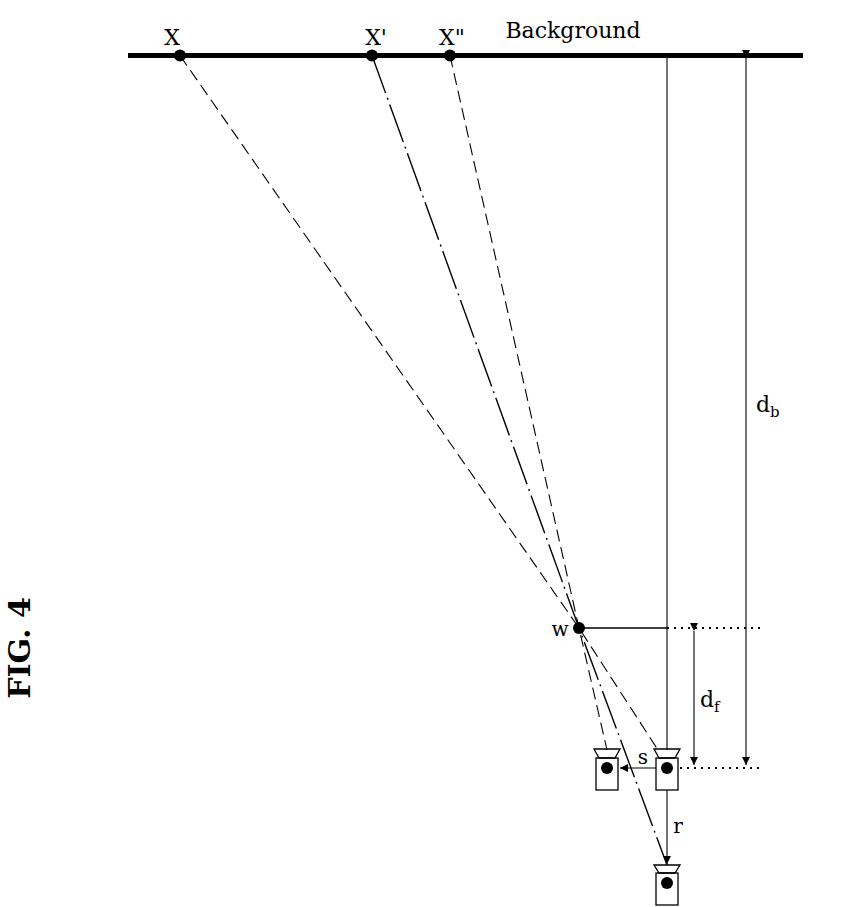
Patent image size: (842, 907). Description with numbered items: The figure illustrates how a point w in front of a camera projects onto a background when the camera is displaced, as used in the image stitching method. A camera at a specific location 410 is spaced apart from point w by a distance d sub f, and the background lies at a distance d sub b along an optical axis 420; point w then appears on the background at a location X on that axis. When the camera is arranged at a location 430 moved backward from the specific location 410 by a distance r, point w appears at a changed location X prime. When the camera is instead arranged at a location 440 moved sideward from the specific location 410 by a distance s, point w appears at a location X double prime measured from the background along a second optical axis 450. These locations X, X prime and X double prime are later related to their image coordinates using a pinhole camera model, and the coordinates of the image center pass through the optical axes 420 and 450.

The specific location 410 is at (672, 771).
The optical axis 420 is at (649, 404).
The location moved backward 430 is at (672, 883).
The location moved sideward 440 is at (596, 768).
The optical axis 450 is at (583, 322).